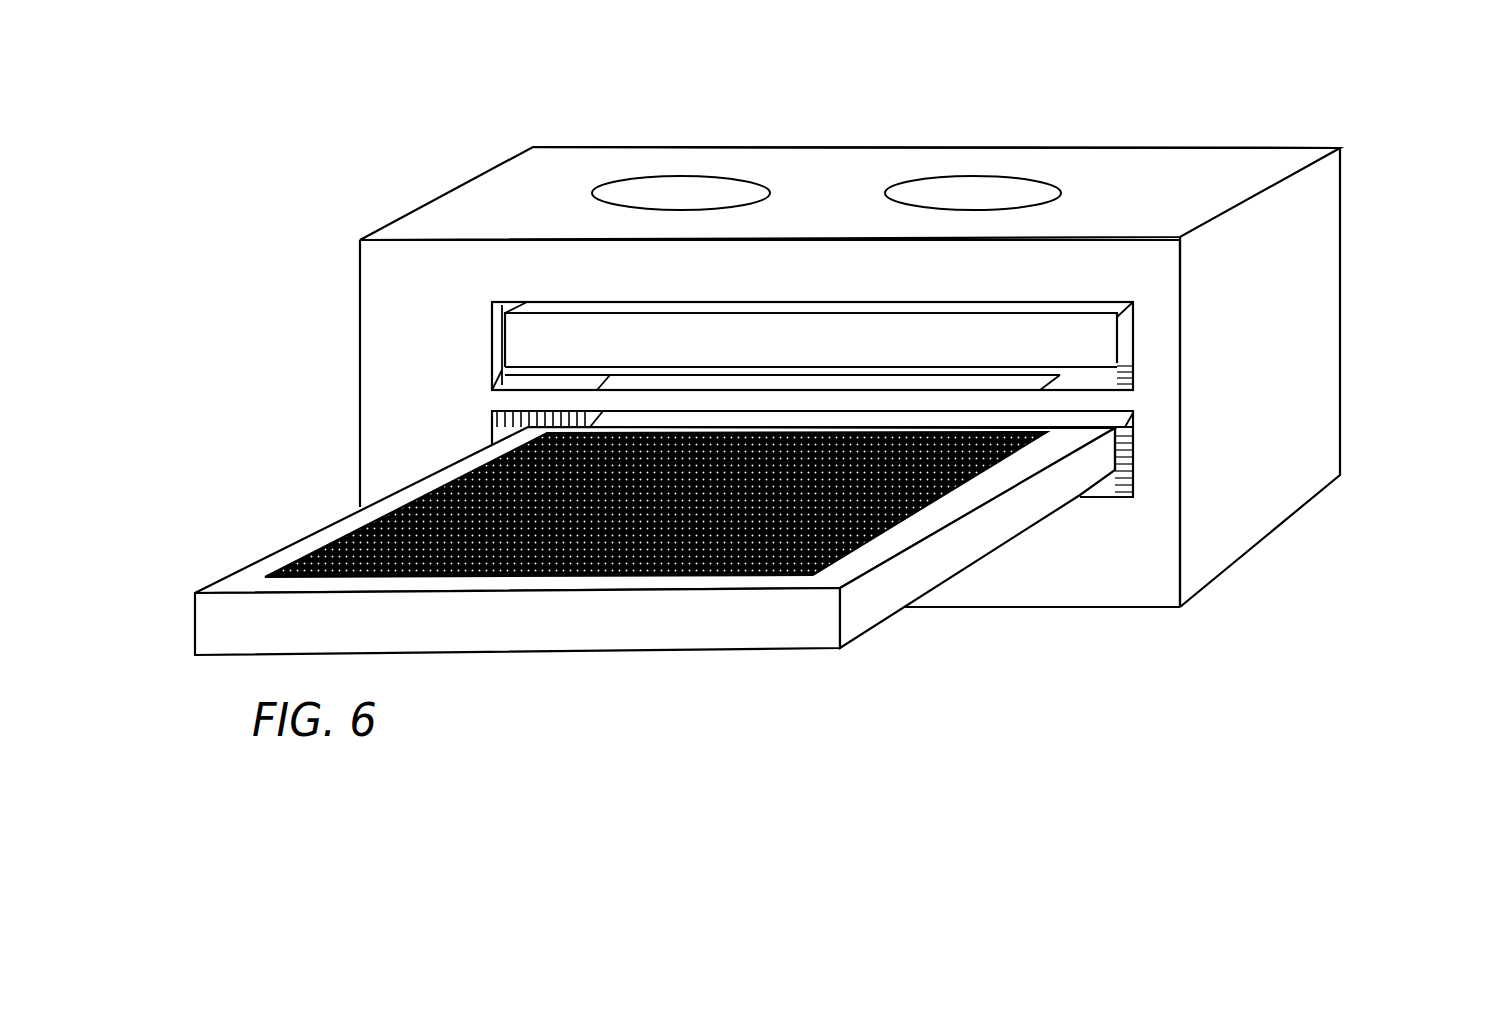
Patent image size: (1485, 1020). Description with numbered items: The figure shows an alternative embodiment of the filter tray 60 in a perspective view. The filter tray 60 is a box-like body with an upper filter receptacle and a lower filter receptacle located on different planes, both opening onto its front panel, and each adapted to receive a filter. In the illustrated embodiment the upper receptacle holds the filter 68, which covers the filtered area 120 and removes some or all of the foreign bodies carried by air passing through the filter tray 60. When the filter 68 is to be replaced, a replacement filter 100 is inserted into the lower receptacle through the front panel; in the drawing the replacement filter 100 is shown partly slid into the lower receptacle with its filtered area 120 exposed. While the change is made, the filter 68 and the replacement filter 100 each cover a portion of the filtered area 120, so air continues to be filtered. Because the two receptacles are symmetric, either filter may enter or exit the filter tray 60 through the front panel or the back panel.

The filter tray 60 is at (356, 143).
The filter 68 is at (1098, 343).
The replacement filter 100 is at (860, 606).
The filtered area 120 is at (1043, 607).